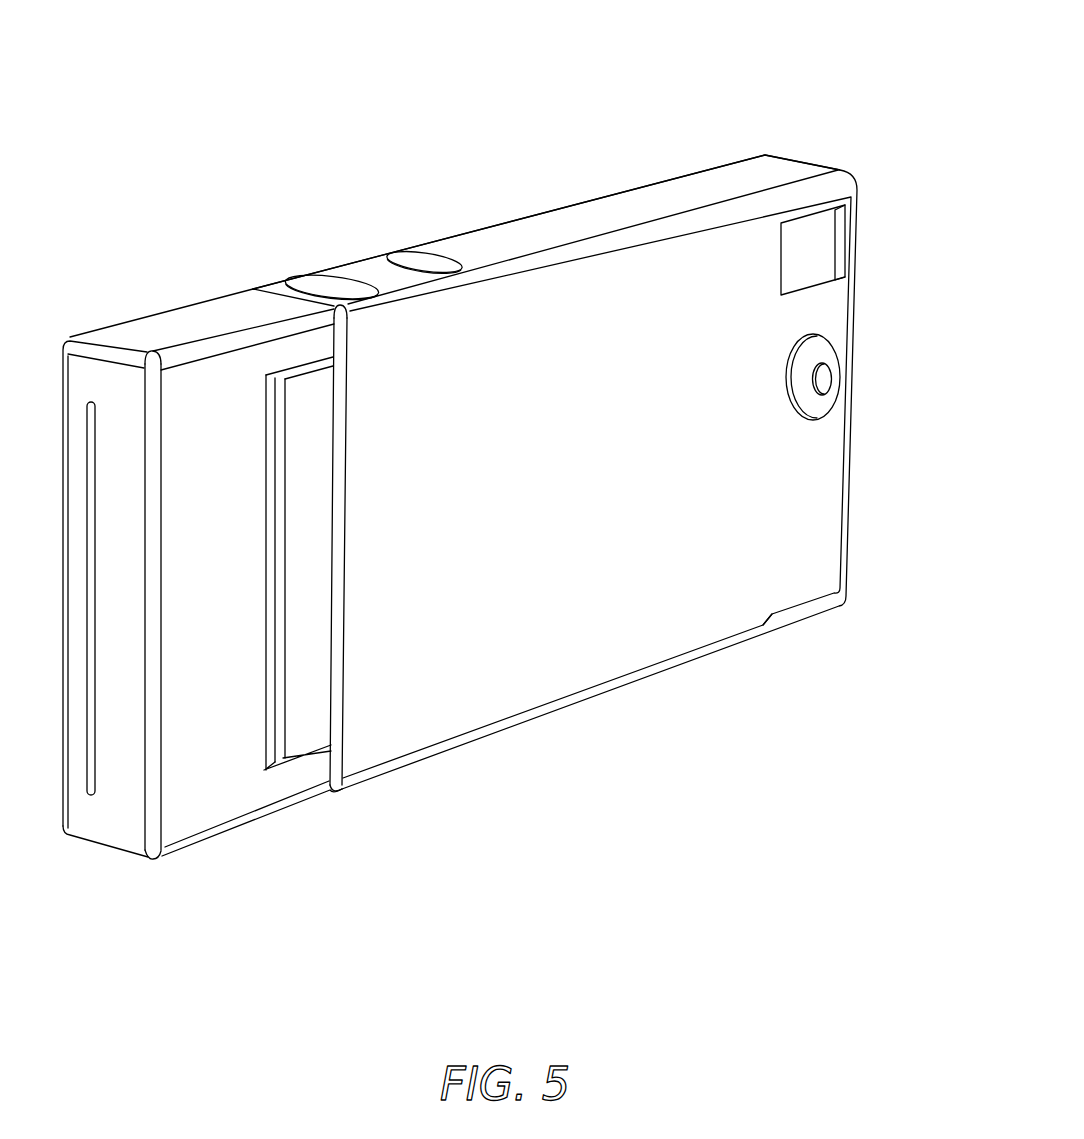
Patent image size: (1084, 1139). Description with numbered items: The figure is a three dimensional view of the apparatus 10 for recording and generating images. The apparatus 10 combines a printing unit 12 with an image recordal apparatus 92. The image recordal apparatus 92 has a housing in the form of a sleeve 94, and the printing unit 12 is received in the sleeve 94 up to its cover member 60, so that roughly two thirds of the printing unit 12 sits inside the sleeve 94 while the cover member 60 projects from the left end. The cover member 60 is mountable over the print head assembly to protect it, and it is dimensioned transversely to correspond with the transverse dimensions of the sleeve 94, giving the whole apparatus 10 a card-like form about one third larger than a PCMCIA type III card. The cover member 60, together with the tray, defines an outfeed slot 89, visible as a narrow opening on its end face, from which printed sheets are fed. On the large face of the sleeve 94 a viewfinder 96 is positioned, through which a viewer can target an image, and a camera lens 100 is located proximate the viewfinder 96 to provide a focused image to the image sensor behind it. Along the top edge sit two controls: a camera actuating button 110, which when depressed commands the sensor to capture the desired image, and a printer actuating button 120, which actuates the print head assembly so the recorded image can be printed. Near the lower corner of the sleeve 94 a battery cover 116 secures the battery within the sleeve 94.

The apparatus for recording and generating images 10 is at (712, 98).
The printing unit 12 is at (166, 310).
The outfeed slot 89 is at (87, 438).
The cover member 60 is at (256, 796).
The image recordal apparatus 92 is at (593, 200).
The sleeve 94 is at (614, 660).
The viewfinder 96 is at (817, 243).
The camera lens 100 is at (822, 380).
The camera actuating button 110 is at (327, 278).
The printer actuating button 120 is at (422, 257).
The battery cover 116 is at (807, 610).